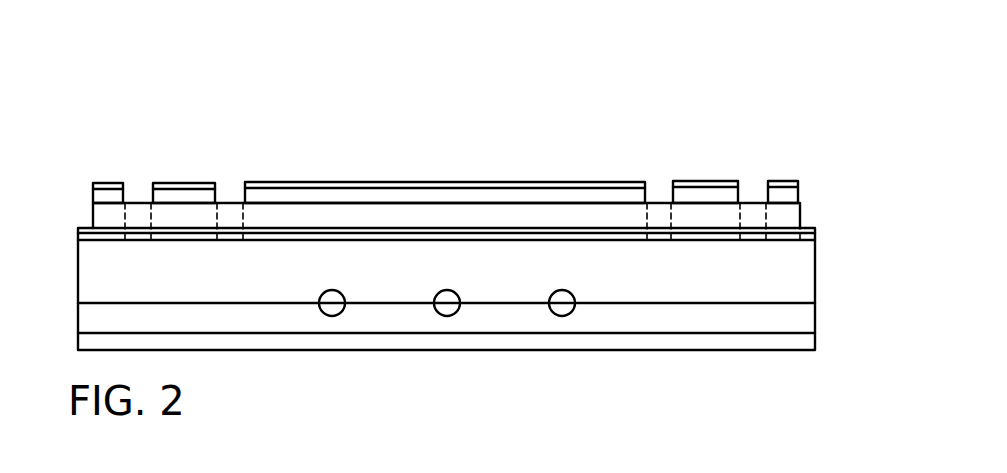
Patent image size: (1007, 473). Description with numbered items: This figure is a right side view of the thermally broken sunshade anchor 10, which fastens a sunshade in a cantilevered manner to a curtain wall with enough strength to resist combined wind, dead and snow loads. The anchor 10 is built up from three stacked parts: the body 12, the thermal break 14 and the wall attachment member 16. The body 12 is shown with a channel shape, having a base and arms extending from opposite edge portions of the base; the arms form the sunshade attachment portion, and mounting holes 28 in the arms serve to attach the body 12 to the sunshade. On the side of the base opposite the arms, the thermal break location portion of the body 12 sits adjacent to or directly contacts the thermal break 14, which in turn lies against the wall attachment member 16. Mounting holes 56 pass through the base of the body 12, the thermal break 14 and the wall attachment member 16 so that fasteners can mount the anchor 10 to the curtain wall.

The thermally broken sunshade anchor 10 is at (420, 136).
The body 12 is at (818, 268).
The thermal break 14 is at (800, 210).
The wall attachment member 16 is at (103, 182).
The mounting holes 28 is at (327, 315).
The mounting holes 56 is at (142, 170).